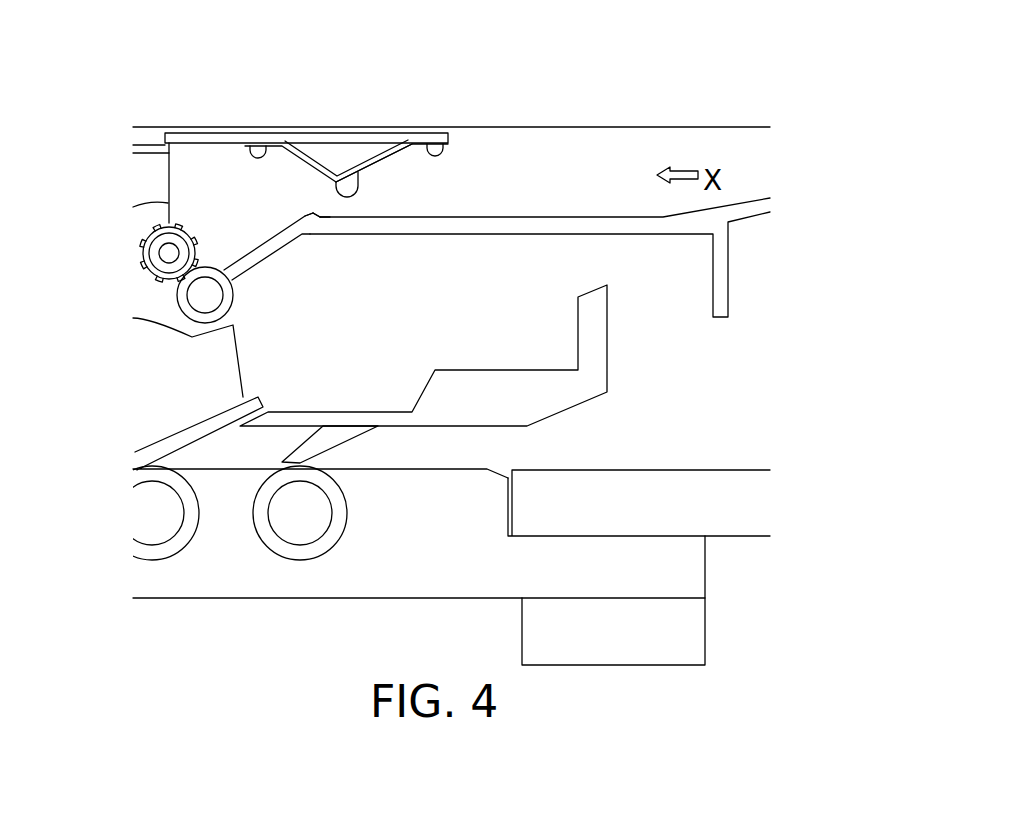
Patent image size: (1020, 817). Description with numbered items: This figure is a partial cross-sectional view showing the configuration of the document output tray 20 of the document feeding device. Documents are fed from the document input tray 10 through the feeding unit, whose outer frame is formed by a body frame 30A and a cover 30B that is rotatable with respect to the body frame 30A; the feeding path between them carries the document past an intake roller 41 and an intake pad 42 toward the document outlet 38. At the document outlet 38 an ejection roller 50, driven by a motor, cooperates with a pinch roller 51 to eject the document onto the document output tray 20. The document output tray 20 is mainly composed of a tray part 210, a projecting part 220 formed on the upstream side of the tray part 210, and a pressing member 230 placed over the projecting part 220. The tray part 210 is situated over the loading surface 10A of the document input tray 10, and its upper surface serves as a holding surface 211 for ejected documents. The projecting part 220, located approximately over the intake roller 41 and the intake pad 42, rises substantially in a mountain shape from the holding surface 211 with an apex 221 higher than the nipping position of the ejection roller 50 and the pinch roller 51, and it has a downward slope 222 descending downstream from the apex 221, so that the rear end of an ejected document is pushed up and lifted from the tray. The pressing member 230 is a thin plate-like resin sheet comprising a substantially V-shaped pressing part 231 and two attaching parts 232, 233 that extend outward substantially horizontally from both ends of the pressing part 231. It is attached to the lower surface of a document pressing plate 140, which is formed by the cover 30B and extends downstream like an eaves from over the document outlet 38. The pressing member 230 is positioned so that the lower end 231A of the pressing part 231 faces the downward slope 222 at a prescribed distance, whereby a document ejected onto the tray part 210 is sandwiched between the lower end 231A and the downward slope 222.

The document input tray 10 is at (711, 452).
The loading surface 10A is at (633, 470).
The document output tray 20 is at (608, 157).
The body frame 30A is at (236, 622).
The cover 30B is at (183, 104).
The document outlet 38 is at (217, 242).
The intake roller 41 is at (322, 545).
The intake pad 42 is at (340, 440).
The ejection roller 50 is at (178, 303).
The pinch roller 51 is at (142, 258).
The document pressing plate 140 is at (348, 115).
The tray part 210 is at (490, 255).
The holding surface 211 is at (541, 217).
The projecting part 220 is at (276, 222).
The apex 221 is at (307, 212).
The downward slope 222 is at (314, 213).
The pressing member 230 is at (312, 142).
The pressing part 231 is at (395, 160).
The lower end 231A is at (357, 176).
The attaching part 232 is at (258, 146).
The attaching part 233 is at (440, 144).